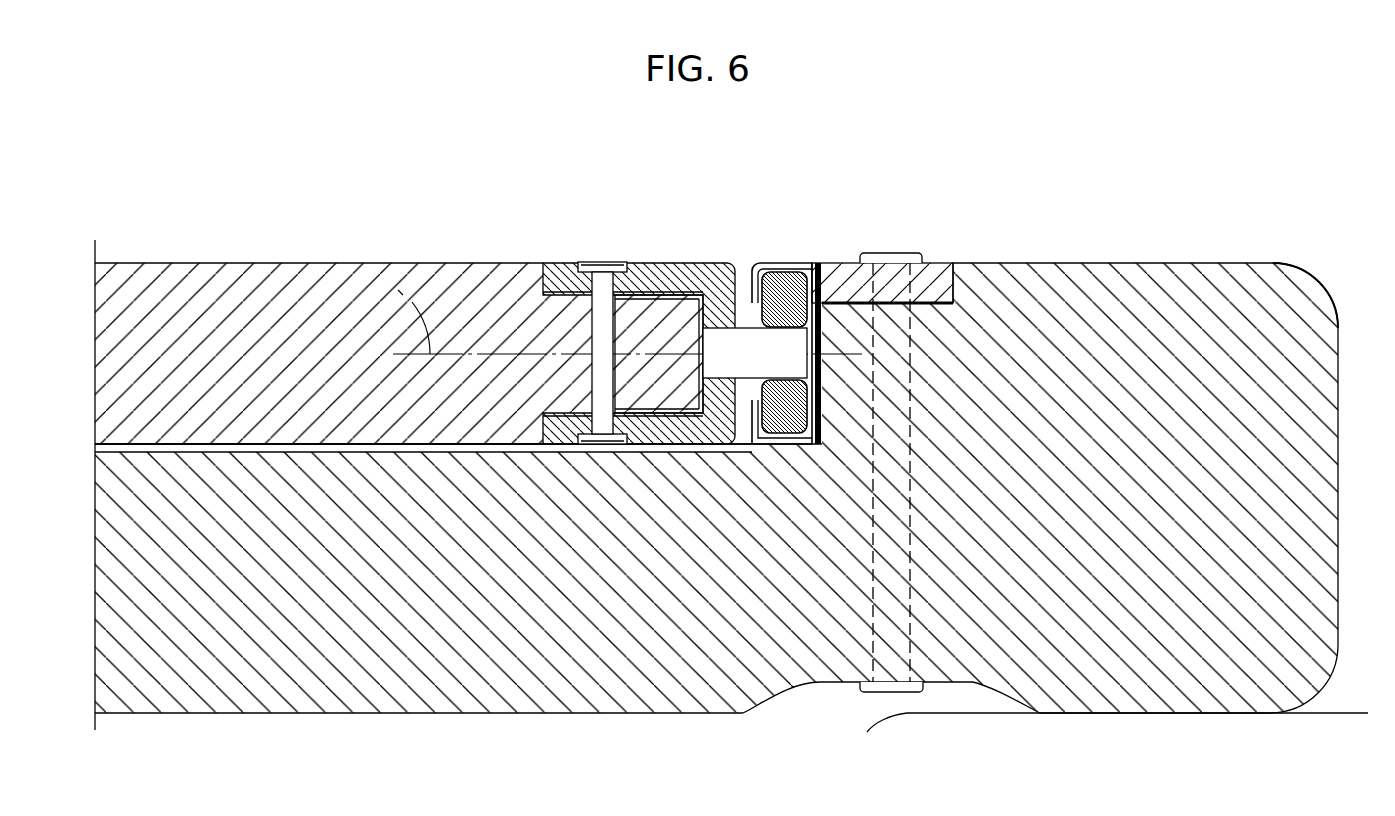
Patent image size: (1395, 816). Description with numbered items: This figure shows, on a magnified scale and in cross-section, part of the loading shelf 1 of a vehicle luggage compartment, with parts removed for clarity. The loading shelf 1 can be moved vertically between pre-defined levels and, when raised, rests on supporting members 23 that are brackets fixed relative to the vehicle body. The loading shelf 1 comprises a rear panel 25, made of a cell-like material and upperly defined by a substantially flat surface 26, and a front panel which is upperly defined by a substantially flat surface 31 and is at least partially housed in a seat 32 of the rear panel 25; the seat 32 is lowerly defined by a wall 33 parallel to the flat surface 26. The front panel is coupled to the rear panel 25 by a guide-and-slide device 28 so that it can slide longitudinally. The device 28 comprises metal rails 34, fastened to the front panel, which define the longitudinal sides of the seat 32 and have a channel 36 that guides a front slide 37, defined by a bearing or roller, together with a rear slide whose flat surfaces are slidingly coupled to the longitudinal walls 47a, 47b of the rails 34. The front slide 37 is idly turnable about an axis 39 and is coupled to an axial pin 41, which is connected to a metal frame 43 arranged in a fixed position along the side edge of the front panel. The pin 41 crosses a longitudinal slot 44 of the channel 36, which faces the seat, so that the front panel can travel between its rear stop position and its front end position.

The loading shelf 1 is at (1240, 154).
The supporting members 23 is at (1325, 735).
The rear panel 25 is at (1275, 268).
The flat surface 26 is at (1088, 258).
The guide-and-slide device 28 is at (926, 241).
The flat surface 31 is at (239, 258).
The seat 32 is at (122, 440).
The wall 33 is at (105, 568).
The rails 34 is at (851, 262).
The channel 36 is at (802, 442).
The front slide 37 is at (757, 263).
The axis 39 is at (390, 283).
The axial pin 41 is at (745, 337).
The frame 43 is at (652, 275).
The longitudinal slot 44 is at (755, 312).
The longitudinal wall 47a is at (782, 268).
The longitudinal wall 47b is at (778, 428).